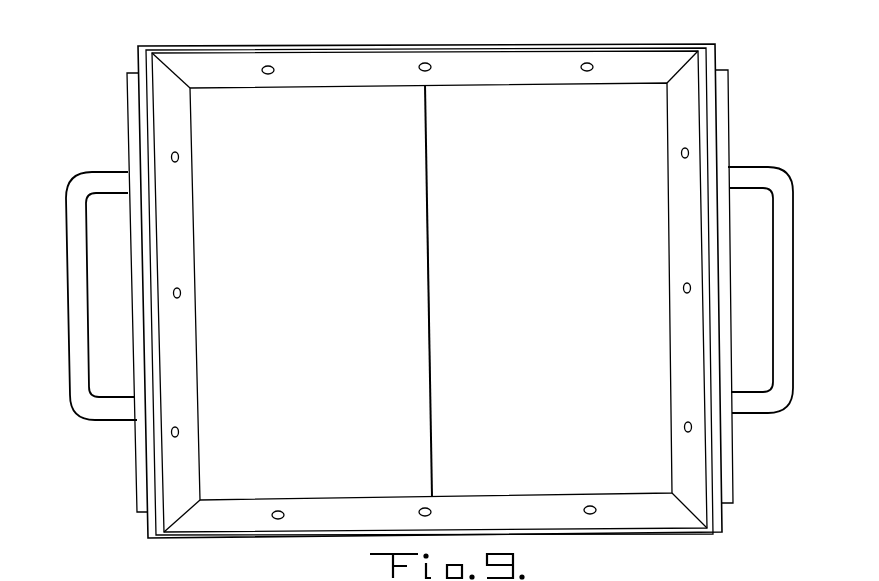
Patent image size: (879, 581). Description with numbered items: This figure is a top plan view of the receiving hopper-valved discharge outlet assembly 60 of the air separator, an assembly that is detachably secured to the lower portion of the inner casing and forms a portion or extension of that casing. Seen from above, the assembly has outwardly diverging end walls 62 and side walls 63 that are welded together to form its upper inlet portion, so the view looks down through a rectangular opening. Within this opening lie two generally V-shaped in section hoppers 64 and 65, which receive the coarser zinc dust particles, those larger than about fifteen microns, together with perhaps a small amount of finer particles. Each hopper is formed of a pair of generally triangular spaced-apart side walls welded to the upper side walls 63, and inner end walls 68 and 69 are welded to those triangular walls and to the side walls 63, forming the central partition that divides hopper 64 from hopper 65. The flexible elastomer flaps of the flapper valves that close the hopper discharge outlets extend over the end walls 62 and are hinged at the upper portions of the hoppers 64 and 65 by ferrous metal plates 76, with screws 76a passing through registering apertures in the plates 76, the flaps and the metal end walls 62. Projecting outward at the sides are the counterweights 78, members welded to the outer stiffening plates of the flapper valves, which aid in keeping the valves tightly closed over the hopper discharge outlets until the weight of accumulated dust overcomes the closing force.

The receiving hopper-valved discharge outlet assembly 60 is at (740, 470).
The end walls 62 is at (170, 98).
The side walls 63 is at (384, 60).
The hopper 64 is at (328, 306).
The hopper 65 is at (553, 306).
The inner end wall 68 is at (428, 326).
The inner end wall 69 is at (432, 286).
The ferrous metal plates 76 is at (140, 460).
The screws 76a is at (181, 157).
The counterweights 78 is at (85, 318).